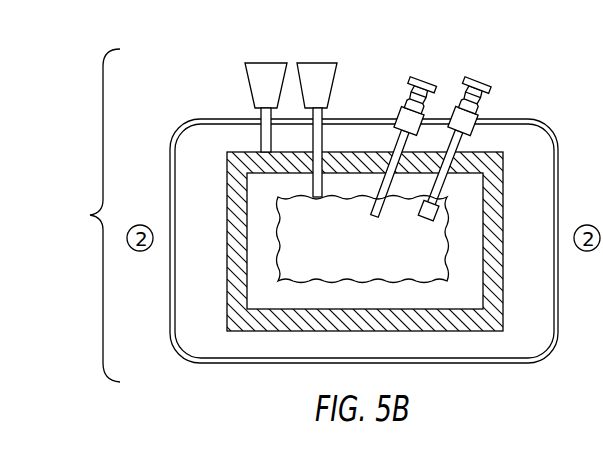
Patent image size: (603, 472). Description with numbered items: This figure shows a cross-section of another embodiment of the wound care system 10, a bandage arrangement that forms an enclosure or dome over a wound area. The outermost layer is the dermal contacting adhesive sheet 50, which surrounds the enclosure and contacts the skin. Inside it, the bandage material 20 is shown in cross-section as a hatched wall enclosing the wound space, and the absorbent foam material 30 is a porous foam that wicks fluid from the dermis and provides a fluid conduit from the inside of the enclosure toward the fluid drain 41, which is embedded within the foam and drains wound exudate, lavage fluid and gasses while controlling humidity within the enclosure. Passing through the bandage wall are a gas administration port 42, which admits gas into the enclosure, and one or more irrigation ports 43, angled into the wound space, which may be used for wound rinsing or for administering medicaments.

The wound care system 10 is at (88, 215).
The bandage material 20 is at (378, 257).
The absorbent foam material 30 is at (492, 157).
The fluid drain 41 is at (262, 62).
The gas administration port 42 is at (315, 63).
The irrigation ports 43 is at (428, 68).
The dermal contacting adhesive sheet 50 is at (211, 188).